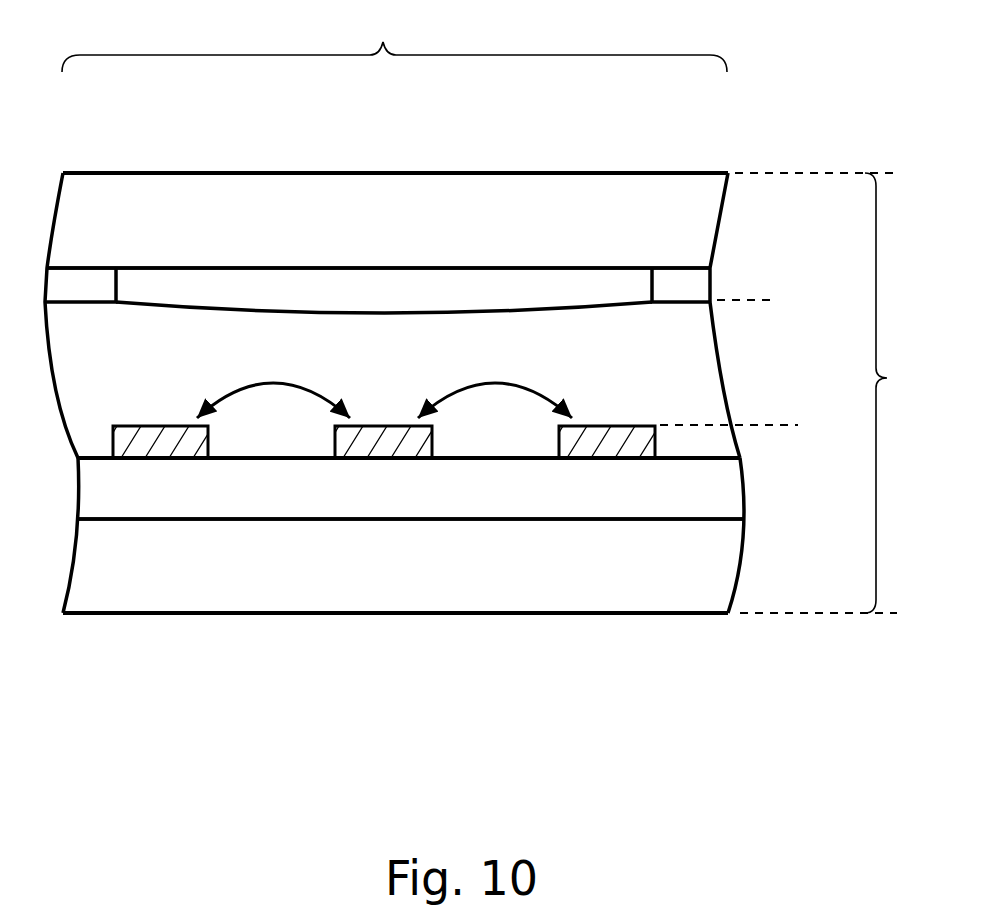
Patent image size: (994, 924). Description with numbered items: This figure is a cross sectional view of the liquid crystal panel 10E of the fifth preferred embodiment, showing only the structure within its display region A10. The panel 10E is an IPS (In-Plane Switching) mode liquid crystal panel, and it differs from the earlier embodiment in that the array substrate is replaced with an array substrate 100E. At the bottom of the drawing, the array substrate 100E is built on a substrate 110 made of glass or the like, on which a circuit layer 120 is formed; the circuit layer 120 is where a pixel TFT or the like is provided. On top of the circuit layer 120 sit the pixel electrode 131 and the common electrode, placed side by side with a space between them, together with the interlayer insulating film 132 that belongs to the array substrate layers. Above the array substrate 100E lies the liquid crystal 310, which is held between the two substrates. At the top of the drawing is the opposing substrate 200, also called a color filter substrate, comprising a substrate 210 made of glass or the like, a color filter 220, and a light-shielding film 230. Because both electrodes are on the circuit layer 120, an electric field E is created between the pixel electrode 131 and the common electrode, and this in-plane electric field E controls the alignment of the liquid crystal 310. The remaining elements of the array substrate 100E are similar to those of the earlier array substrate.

The display region A10 is at (394, 39).
The liquid crystal panel 10E is at (805, 393).
The array substrate 100E is at (757, 427).
The substrate 110 is at (105, 595).
The circuit layer 120 is at (235, 507).
The pixel electrode 131 is at (388, 436).
The interlayer insulating film 132 is at (152, 436).
The electric field E is at (275, 385).
The opposing substrate 200 is at (748, 175).
The substrate 210 is at (252, 200).
The color filter 220 is at (408, 283).
The light-shielding film 230 is at (80, 278).
The liquid crystal 310 is at (706, 358).